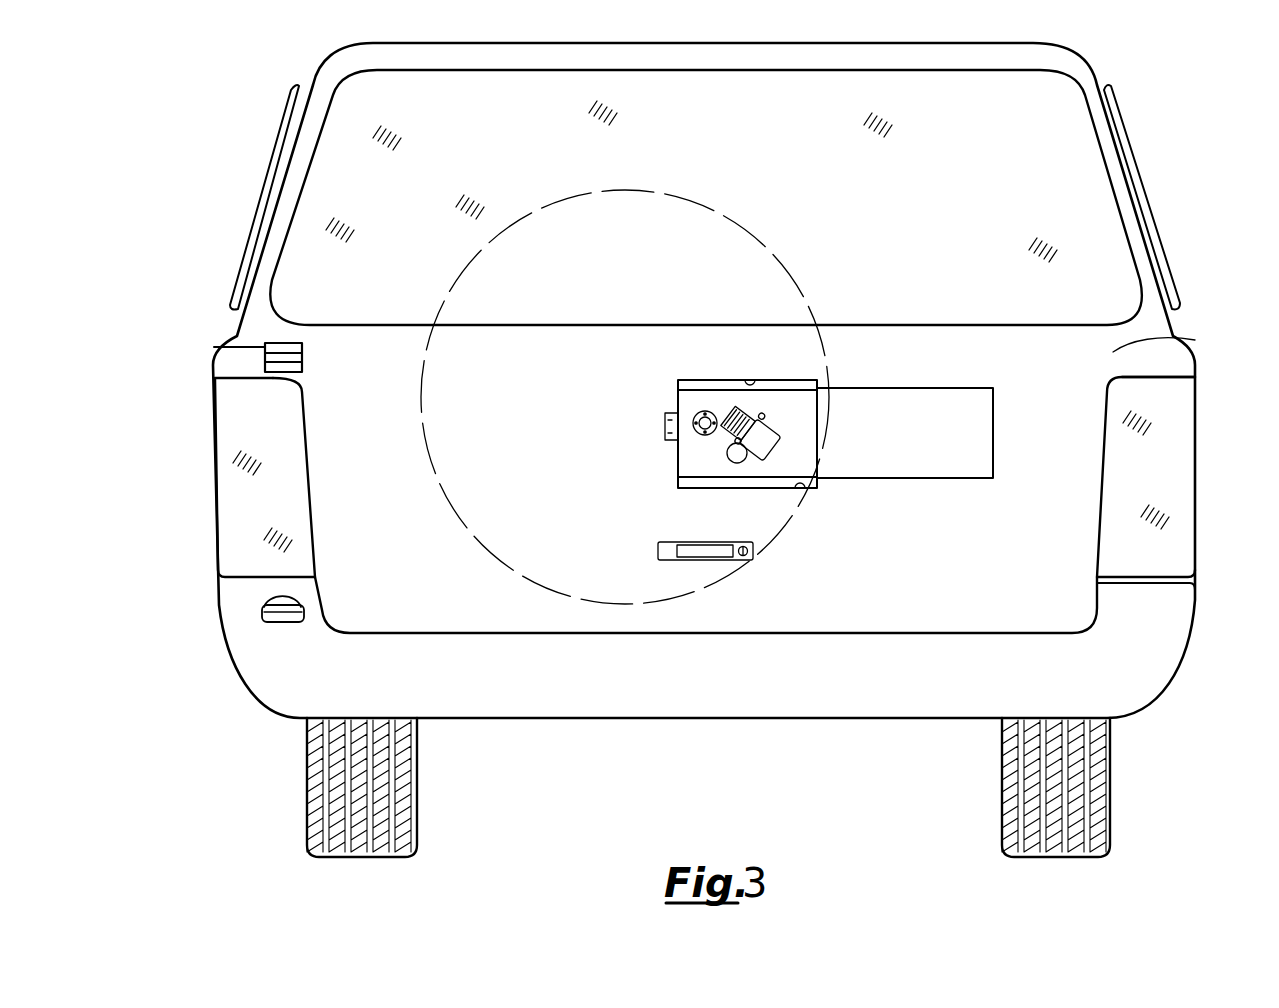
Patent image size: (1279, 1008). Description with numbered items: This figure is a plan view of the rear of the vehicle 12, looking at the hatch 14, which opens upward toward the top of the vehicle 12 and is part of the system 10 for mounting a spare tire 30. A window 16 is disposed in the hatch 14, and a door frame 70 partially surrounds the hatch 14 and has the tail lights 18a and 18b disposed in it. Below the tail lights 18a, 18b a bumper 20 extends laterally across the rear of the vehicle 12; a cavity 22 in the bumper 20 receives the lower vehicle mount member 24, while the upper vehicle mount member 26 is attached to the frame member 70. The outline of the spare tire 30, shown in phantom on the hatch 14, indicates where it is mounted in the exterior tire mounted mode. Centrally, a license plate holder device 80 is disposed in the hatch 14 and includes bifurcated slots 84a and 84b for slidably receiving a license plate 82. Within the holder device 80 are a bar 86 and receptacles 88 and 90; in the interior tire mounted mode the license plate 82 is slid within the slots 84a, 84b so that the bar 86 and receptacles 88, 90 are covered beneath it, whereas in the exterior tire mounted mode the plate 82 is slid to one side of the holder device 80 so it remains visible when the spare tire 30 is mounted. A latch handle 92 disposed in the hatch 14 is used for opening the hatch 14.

The system 10 is at (411, 284).
The vehicle 12 is at (1175, 152).
The hatch 14 is at (1195, 340).
The window 16 is at (373, 318).
The tail light 18a is at (228, 490).
The tail light 18b is at (1112, 518).
The bumper 20 is at (970, 648).
The cavity 22 is at (265, 606).
The lower vehicle mount member 24 is at (262, 617).
The upper vehicle mount member 26 is at (268, 353).
The spare tire 30 is at (783, 258).
The door frame 70 is at (1095, 400).
The license plate holder device 80 is at (826, 372).
The license plate 82 is at (950, 393).
The bifurcated slot 84a is at (745, 380).
The bifurcated slot 84b is at (805, 492).
The bar 86 is at (743, 407).
The receptacle 88 is at (697, 425).
The receptacle 90 is at (738, 464).
The latch handle 92 is at (690, 560).